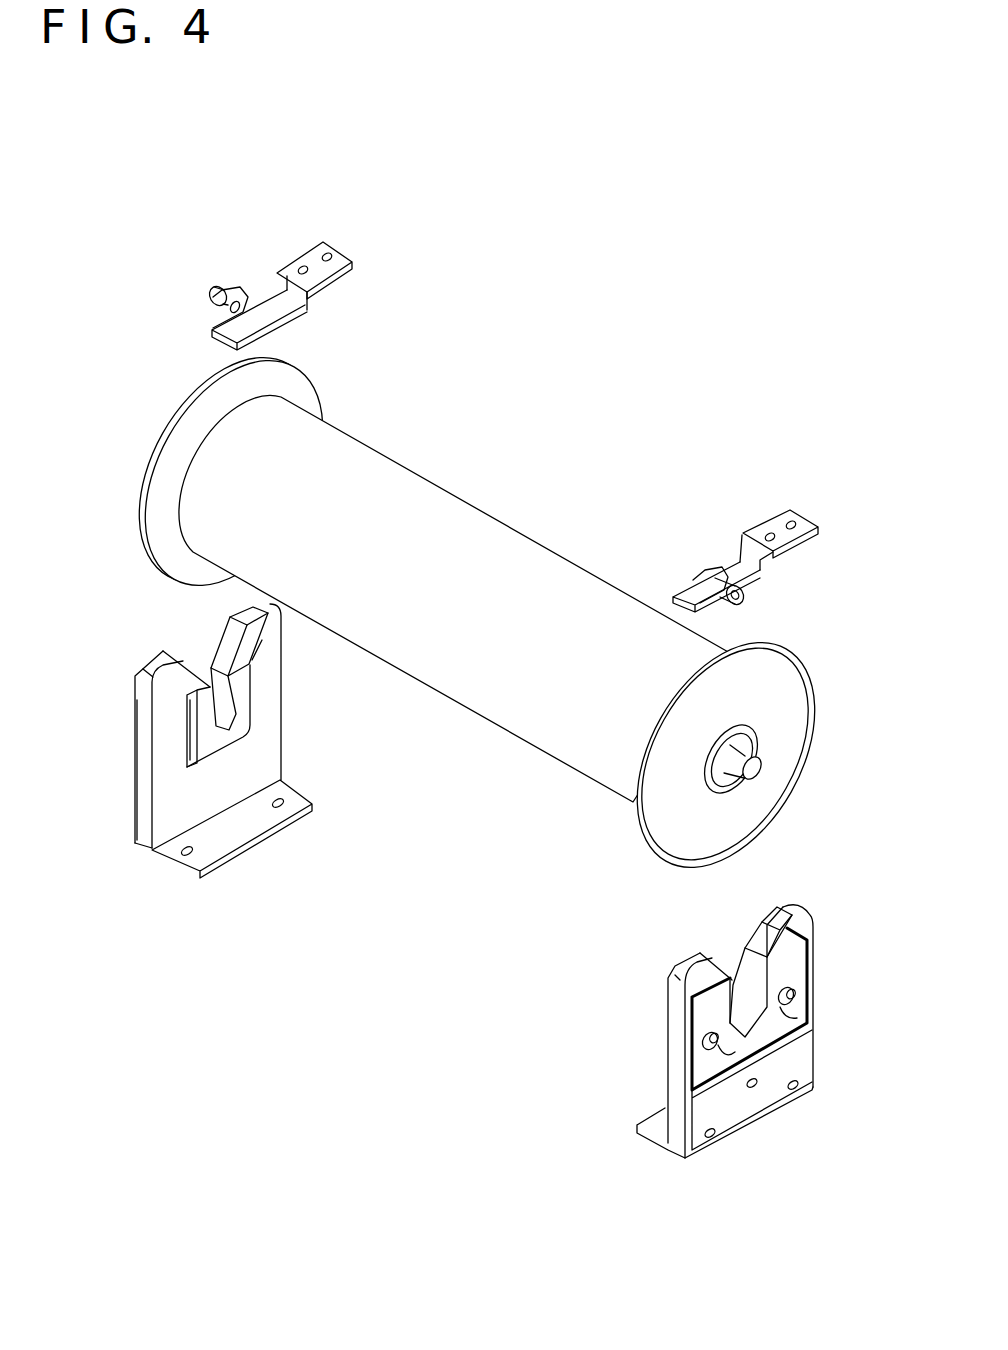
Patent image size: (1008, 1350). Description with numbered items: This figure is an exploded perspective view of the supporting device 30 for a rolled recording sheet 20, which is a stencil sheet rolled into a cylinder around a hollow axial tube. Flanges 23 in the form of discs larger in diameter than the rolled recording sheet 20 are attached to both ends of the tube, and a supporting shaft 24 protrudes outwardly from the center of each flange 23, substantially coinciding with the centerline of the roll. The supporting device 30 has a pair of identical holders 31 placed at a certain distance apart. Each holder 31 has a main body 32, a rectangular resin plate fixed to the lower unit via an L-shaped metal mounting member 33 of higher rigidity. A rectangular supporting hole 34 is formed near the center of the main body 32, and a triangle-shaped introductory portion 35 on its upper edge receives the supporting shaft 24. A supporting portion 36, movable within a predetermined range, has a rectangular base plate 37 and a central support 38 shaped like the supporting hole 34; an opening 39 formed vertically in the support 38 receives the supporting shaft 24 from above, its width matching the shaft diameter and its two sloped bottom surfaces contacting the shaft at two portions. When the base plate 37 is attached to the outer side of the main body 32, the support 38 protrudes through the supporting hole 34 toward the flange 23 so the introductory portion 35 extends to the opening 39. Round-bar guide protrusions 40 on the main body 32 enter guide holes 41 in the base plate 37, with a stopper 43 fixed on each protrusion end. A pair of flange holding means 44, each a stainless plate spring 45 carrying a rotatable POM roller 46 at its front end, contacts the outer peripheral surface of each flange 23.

The rolled recording sheet 20 is at (437, 483).
The flange 23 is at (188, 400).
The supporting shaft 24 is at (752, 767).
The supporting device 30 is at (523, 902).
The holder 31 is at (523, 902).
The main body 32 is at (143, 840).
The mounting member 33 is at (257, 832).
The supporting hole 34 is at (183, 747).
The introductory portion 35 is at (227, 643).
The supporting portion 36 is at (210, 753).
The base plate 37 is at (793, 957).
The support 38 is at (243, 733).
The opening 39 is at (225, 697).
The guide protrusion 40 is at (715, 1047).
The guide hole 41 is at (787, 1017).
The stopper 43 is at (797, 997).
The flange holding means 44 is at (497, 366).
The plate spring 45 is at (268, 312).
The roller 46 is at (212, 252).